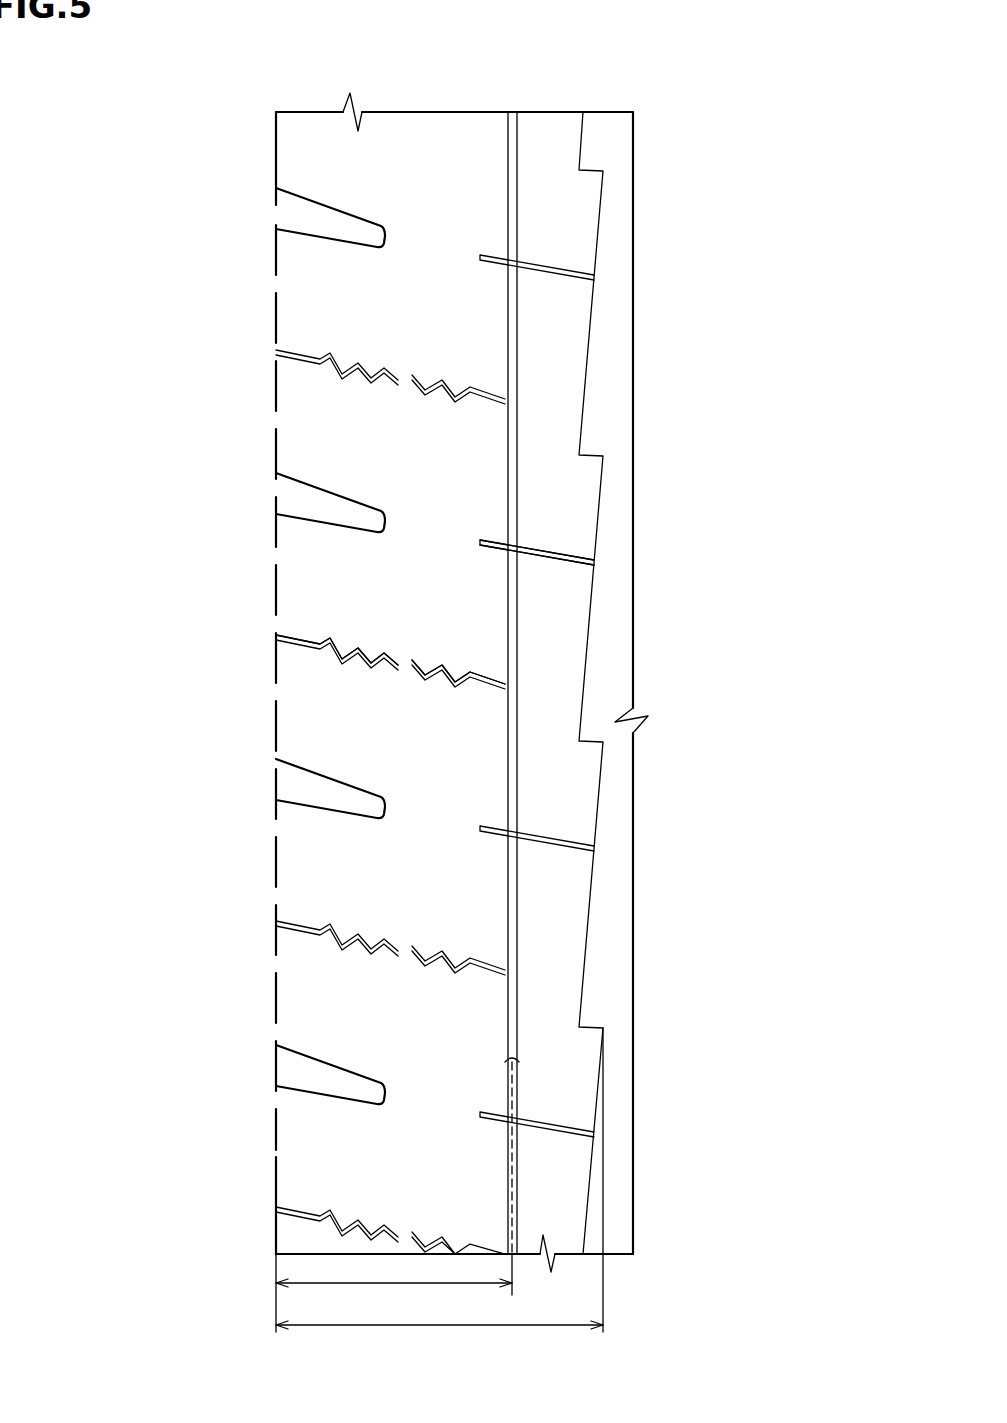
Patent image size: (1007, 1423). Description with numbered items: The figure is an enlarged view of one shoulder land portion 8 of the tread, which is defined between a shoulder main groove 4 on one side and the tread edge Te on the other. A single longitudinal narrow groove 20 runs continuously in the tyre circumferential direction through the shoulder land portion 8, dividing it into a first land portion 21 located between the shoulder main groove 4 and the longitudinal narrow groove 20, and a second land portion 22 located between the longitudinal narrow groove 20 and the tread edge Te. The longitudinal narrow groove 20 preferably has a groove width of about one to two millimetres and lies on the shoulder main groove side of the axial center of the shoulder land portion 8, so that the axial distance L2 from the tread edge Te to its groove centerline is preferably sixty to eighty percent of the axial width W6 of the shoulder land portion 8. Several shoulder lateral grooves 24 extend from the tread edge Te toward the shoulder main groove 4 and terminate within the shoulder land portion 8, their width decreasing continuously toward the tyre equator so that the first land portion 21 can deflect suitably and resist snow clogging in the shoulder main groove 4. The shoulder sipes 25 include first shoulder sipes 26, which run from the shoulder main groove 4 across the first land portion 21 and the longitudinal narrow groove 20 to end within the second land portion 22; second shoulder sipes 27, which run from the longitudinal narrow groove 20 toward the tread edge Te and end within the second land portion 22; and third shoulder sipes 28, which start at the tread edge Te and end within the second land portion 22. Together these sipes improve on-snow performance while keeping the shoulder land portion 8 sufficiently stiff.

The shoulder land portion 8 is at (577, 58).
The tread edge Te is at (276, 153).
The shoulder main groove 4 is at (608, 338).
The longitudinal narrow groove 20 is at (508, 213).
The first land portion 21 is at (551, 157).
The second land portion 22 is at (437, 157).
The shoulder lateral groove 24 is at (328, 222).
The shoulder sipe 25 is at (747, 492).
The first shoulder sipe 26 is at (555, 548).
The second shoulder sipe 27 is at (452, 672).
The third shoulder sipe 28 is at (385, 640).
The distance L2 is at (397, 1195).
The width W6 is at (439, 1195).